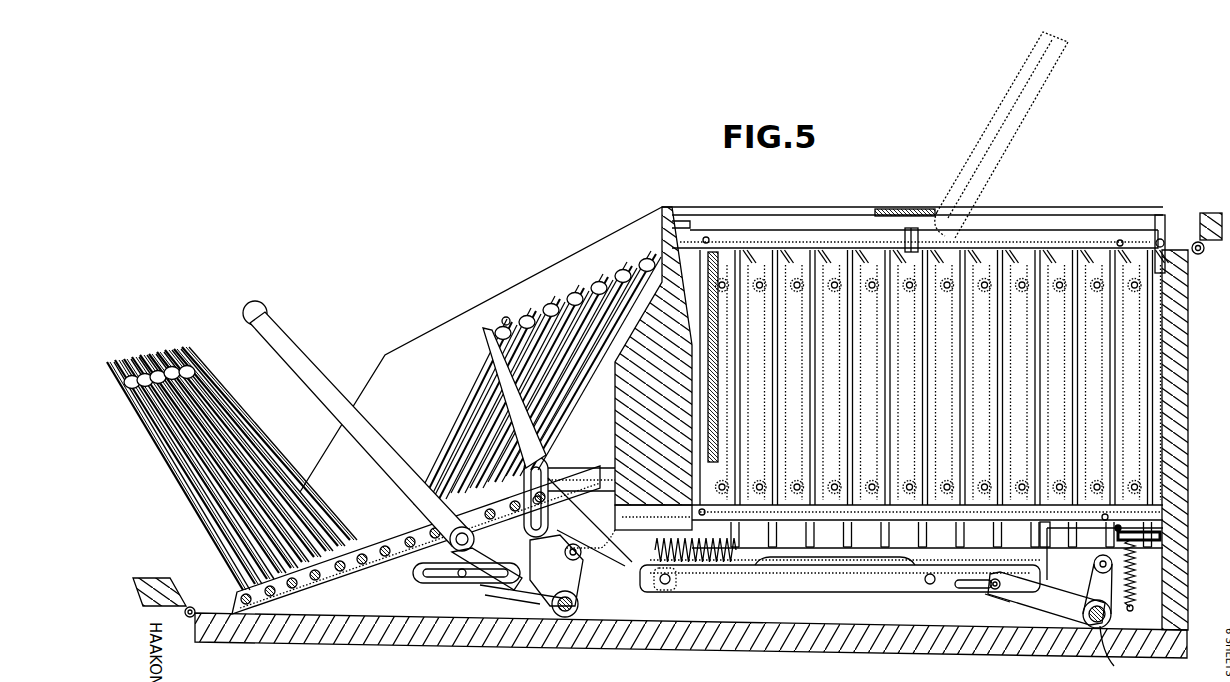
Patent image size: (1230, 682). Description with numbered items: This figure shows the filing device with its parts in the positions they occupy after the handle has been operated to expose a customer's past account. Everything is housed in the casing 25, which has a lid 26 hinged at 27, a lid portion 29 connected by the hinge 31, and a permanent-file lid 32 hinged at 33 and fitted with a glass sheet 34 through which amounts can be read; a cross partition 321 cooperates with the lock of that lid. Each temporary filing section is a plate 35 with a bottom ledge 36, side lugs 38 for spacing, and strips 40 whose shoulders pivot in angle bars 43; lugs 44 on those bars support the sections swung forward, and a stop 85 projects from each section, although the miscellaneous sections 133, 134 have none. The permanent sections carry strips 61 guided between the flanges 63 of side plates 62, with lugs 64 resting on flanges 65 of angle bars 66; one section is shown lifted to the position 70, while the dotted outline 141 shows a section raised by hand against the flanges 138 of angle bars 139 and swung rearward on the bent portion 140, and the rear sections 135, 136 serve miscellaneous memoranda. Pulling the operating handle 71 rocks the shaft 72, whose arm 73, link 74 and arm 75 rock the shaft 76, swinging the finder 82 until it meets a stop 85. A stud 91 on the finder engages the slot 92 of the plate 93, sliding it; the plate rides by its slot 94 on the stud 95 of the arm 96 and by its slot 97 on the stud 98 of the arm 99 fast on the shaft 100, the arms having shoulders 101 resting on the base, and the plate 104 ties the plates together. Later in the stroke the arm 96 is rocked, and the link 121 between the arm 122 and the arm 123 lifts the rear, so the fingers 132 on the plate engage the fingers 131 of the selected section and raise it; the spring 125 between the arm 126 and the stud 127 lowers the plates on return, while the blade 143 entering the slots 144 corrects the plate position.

The casing 25 is at (887, 650).
The lid 26 is at (1208, 213).
The hinge 27 is at (1188, 440).
The lid portion 29 is at (160, 580).
The hinge 31 is at (187, 617).
The lid 32 is at (828, 214).
The hinge 33 is at (1162, 240).
The sheet 34 is at (900, 209).
The plate 35 is at (338, 519).
The ledge 36 is at (350, 536).
The lugs 38 is at (550, 302).
The strips 40 is at (550, 432).
The angle bars 43 is at (358, 553).
The lugs 44 is at (239, 598).
The strips 61 is at (1000, 372).
The plates 62 is at (980, 266).
The flanges 63 is at (1040, 326).
The lugs 64 is at (958, 515).
The flanges 65 is at (1004, 516).
The angle bars 66 is at (1112, 523).
The raised position 70 is at (905, 236).
The operating handle 71 is at (285, 346).
The rock shaft 72 is at (469, 535).
The arm 73 is at (478, 561).
The link 74 is at (538, 566).
The arm 75 is at (583, 560).
The rock shaft 76 is at (579, 604).
The finder 82 is at (480, 342).
The stop 85 is at (508, 323).
The stud 91 is at (550, 478).
The slot 92 is at (548, 510).
The plate 93 is at (815, 575).
The slot 94 is at (440, 579).
The stud 95 is at (460, 580).
The arm 96 is at (520, 592).
The slot 97 is at (962, 590).
The stud 98 is at (994, 590).
The arm 99 is at (1055, 609).
The rock shaft 100 is at (1121, 653).
The shoulders 101 is at (495, 590).
The plate 104 is at (782, 591).
The link 121 is at (1048, 562).
The arm 122 is at (586, 573).
The arm 123 is at (1116, 558).
The spring 125 is at (1126, 572).
The arm 126 is at (1108, 614).
The stud 127 is at (1128, 540).
The fingers 131 is at (922, 512).
The fingers 132 is at (826, 528).
The temporary filing section 133 is at (556, 410).
The temporary filing section 134 is at (570, 388).
The permanent filing section 135 is at (1084, 252).
The permanent filing section 136 is at (1114, 252).
The flanges 138 is at (718, 242).
The angle bars 139 is at (762, 232).
The bent portion 140 is at (790, 250).
The dotted outline 141 is at (1027, 109).
The blade 143 is at (690, 521).
The slots 144 is at (708, 545).
The cross partition 321 is at (665, 290).